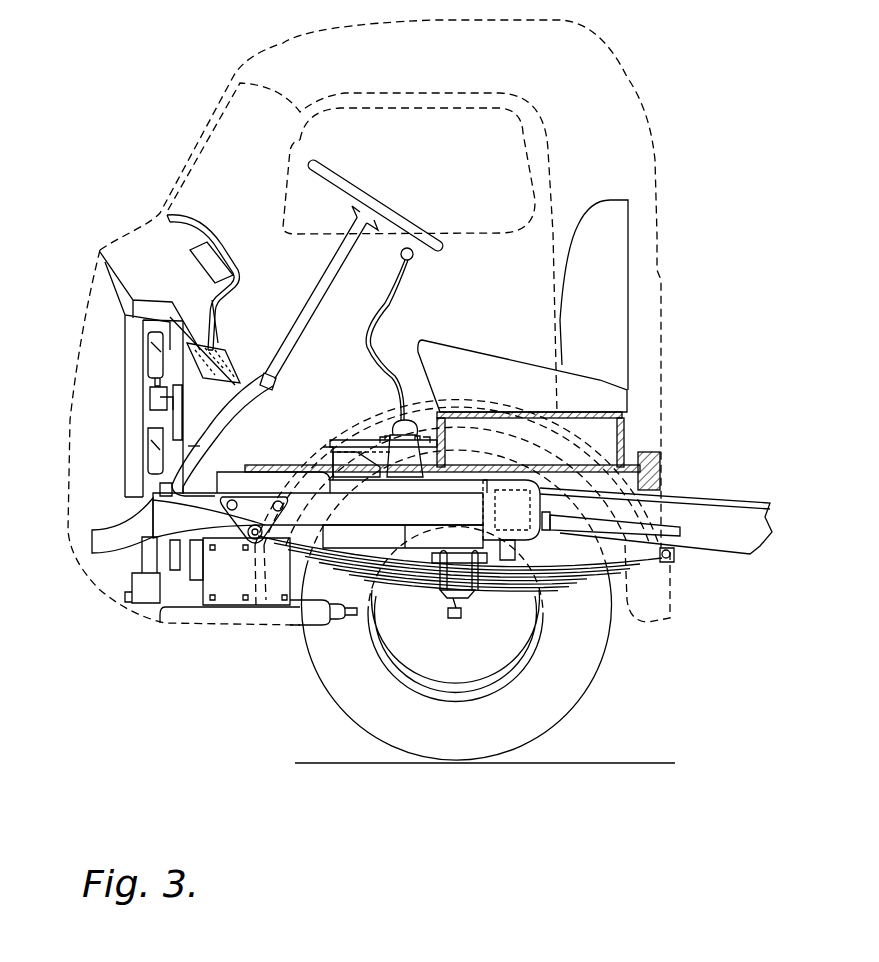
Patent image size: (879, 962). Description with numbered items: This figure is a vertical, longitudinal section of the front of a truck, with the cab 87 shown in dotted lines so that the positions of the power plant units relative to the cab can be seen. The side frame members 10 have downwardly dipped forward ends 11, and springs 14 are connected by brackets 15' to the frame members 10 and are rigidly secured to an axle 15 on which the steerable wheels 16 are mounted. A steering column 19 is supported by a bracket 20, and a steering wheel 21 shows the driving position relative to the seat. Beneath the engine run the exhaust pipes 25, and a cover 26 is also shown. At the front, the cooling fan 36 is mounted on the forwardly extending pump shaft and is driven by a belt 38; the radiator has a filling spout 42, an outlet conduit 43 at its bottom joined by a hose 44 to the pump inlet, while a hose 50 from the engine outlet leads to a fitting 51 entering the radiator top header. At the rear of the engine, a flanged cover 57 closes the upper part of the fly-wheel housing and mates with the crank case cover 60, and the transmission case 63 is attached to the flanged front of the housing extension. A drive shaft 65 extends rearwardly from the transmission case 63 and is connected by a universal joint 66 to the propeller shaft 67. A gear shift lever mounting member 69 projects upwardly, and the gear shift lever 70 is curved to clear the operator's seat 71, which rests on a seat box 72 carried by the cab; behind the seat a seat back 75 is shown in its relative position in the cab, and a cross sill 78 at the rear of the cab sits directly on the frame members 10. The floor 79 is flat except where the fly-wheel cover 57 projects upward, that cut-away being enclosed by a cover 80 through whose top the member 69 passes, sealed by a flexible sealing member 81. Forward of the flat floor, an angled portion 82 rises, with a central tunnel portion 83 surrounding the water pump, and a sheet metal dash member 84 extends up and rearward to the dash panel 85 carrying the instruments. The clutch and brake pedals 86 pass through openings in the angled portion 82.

The side frame member 10 is at (503, 490).
The forward end of side frame member 11 is at (150, 547).
The spring 14 is at (565, 582).
The axle 15 is at (90, 525).
The bracket 15' is at (697, 570).
The steerable wheel 16 is at (590, 648).
The steering column 19 is at (335, 283).
The bracket 20 is at (137, 505).
The steering wheel 21 is at (375, 222).
The exhaust pipe 25 is at (461, 613).
The cover 26 is at (245, 608).
The cooling fan 36 is at (150, 378).
The belt 38 is at (174, 425).
The filling spout 42 is at (115, 287).
The outlet conduit 43 is at (160, 488).
The hose 44 is at (188, 450).
The hose 50 is at (150, 352).
The fitting 51 is at (140, 325).
The flanged cover 57 is at (343, 452).
The crank case cover 60 is at (323, 450).
The transmission case 63 is at (403, 533).
The drive shaft 65 is at (507, 535).
The universal joint 66 is at (548, 525).
The propeller shaft 67 is at (690, 528).
The gear shift lever mounting member 69 is at (407, 443).
The gear shift lever 70 is at (398, 295).
The operator's seat 71 is at (495, 348).
The seat box 72 is at (518, 412).
The seat back 75 is at (604, 210).
The cross sill 78 is at (660, 470).
The floor 79 is at (283, 465).
The cover 80 is at (370, 440).
The flexible sealing member 81 is at (447, 433).
The angled portion 82 is at (230, 448).
The tunnel portion 83 is at (233, 347).
The sheet metal dash member 84 is at (203, 300).
The dash panel 85 is at (240, 287).
The clutch and brake pedals 86 is at (276, 384).
The cab 87 is at (661, 292).